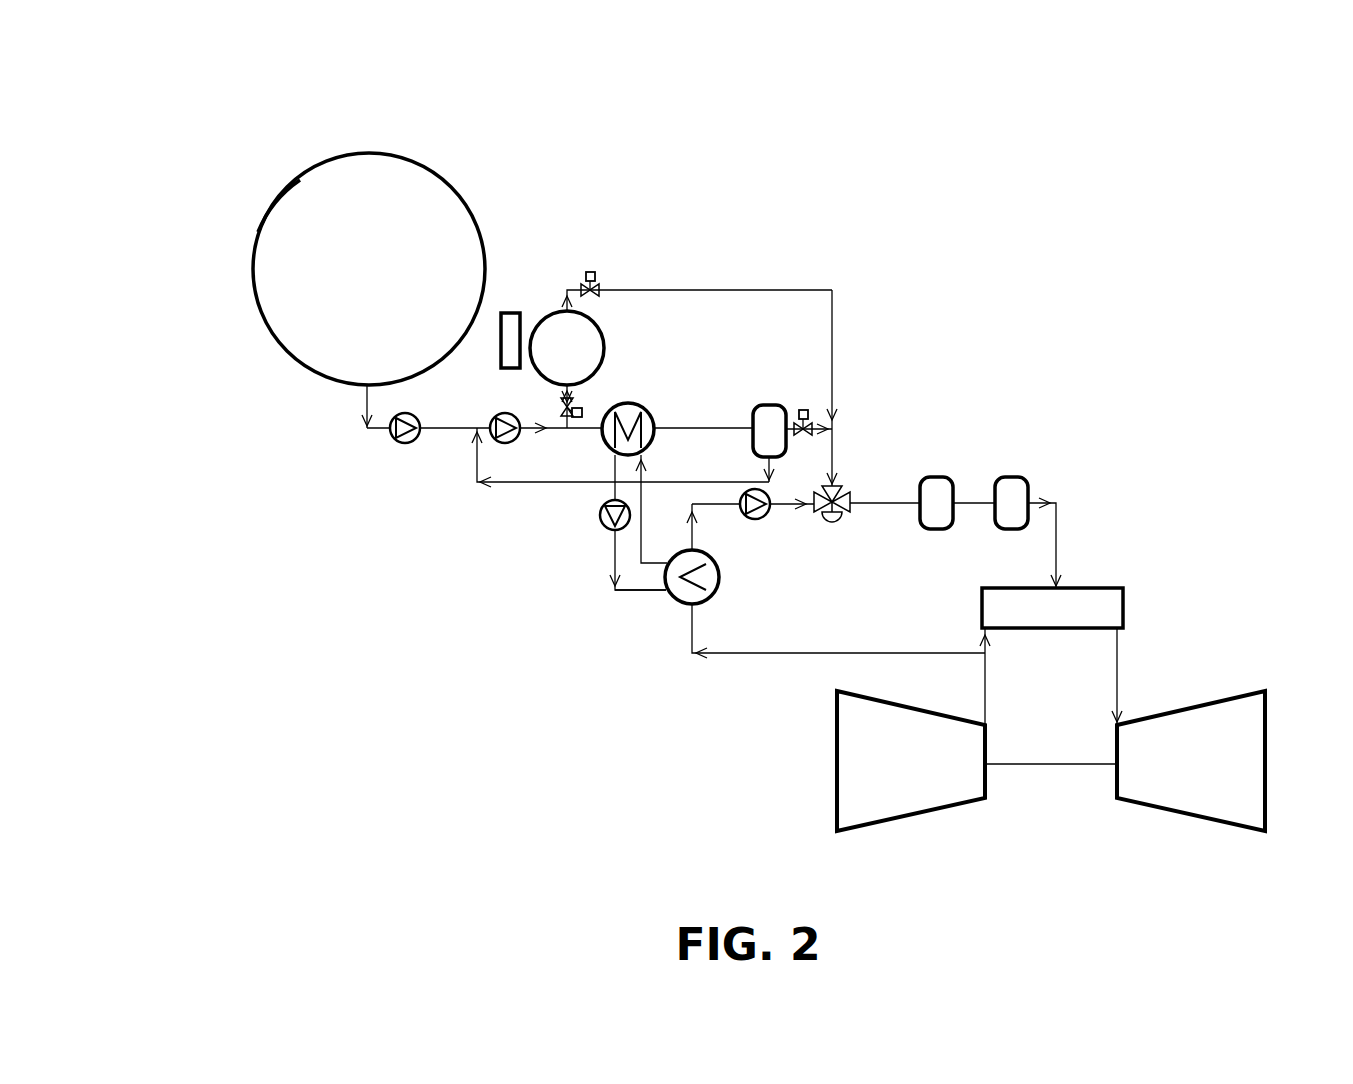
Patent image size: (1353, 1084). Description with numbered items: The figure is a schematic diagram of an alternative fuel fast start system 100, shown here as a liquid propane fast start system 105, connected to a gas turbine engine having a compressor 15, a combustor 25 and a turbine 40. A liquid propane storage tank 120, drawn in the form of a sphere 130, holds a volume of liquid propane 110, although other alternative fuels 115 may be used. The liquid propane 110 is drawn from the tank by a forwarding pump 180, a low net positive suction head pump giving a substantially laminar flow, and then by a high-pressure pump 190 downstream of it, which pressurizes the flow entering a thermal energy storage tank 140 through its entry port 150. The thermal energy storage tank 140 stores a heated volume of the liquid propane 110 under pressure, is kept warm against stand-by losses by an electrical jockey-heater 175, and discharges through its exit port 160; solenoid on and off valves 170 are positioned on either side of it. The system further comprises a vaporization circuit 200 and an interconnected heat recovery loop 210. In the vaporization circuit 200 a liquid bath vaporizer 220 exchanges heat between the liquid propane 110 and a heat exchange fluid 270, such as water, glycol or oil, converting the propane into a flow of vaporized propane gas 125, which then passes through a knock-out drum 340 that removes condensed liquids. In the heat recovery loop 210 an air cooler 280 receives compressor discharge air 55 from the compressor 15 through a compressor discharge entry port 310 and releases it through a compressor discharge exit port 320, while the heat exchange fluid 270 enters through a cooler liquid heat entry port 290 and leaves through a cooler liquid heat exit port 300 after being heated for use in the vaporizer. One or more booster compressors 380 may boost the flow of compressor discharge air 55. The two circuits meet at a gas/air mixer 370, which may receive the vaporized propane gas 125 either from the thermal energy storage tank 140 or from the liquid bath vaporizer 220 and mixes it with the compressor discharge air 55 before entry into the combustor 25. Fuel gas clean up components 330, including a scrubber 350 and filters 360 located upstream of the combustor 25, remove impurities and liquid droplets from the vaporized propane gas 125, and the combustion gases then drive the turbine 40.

The alternative fuel fast start system 100 is at (229, 64).
The liquid propane fast start system 105 is at (318, 84).
The liquid propane storage tank 120 is at (310, 160).
The sphere 130 is at (258, 230).
The alternative fuels 115 is at (364, 380).
The liquid propane 110 is at (364, 402).
The forwarding pump 180 is at (392, 441).
The vaporization circuit 200 is at (444, 442).
The high-pressure pump 190 is at (509, 446).
The thermal energy storage tank 140 is at (602, 336).
The electrical jockey-heater 175 is at (498, 350).
The exit port 160 is at (562, 298).
The entry port 150 is at (575, 386).
The valve 170 is at (595, 273).
The liquid bath vaporizer 220 is at (646, 406).
The knock-out drum 340 is at (769, 404).
The vaporized propane gas 125 is at (833, 456).
The heat recovery loop 210 is at (604, 548).
The heat exchange fluid 270 is at (633, 592).
The cooler liquid heat entry port 290 is at (668, 592).
The air cooler 280 is at (719, 579).
The cooler liquid heat exit port 300 is at (678, 548).
The compressor discharge entry port 310 is at (700, 604).
The compressor discharge exit port 320 is at (711, 556).
The booster compressor 380 is at (744, 496).
The gas/air mixer 370 is at (840, 521).
The scrubber 350 is at (940, 476).
The filter 360 is at (1005, 476).
The fuel gas clean up components 330 is at (1036, 472).
The combustor 25 is at (1088, 588).
The compressor discharge air 55 is at (820, 652).
The compressor 15 is at (920, 817).
The turbine 40 is at (1190, 817).